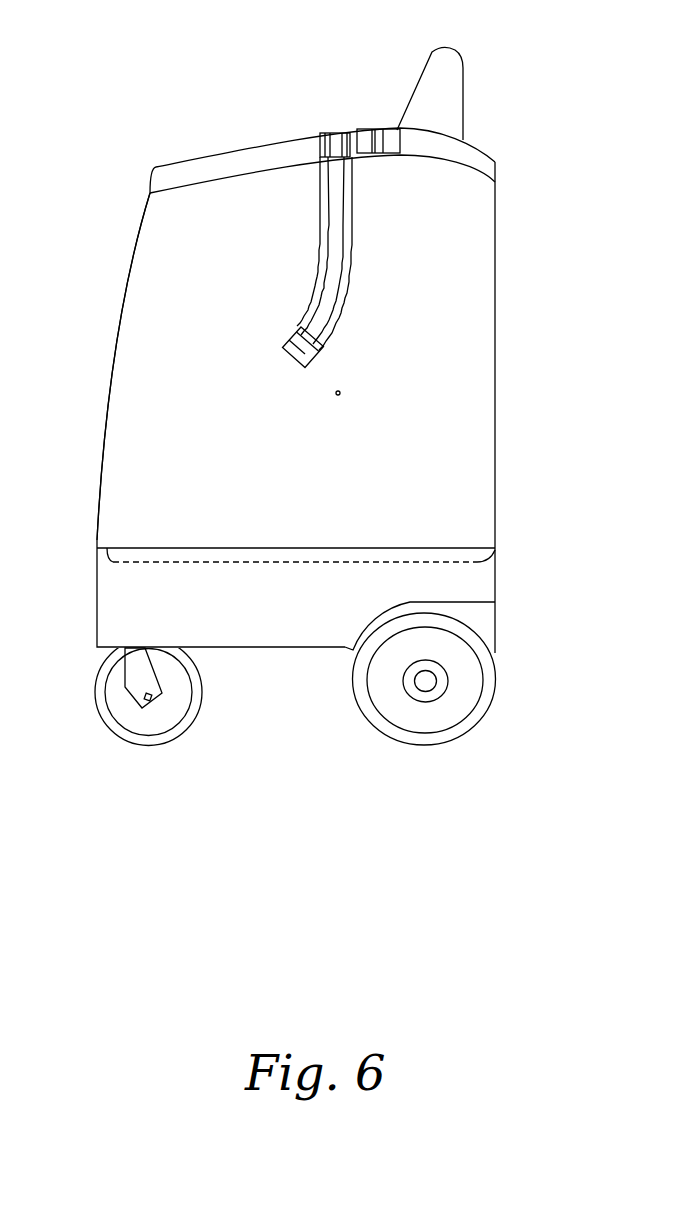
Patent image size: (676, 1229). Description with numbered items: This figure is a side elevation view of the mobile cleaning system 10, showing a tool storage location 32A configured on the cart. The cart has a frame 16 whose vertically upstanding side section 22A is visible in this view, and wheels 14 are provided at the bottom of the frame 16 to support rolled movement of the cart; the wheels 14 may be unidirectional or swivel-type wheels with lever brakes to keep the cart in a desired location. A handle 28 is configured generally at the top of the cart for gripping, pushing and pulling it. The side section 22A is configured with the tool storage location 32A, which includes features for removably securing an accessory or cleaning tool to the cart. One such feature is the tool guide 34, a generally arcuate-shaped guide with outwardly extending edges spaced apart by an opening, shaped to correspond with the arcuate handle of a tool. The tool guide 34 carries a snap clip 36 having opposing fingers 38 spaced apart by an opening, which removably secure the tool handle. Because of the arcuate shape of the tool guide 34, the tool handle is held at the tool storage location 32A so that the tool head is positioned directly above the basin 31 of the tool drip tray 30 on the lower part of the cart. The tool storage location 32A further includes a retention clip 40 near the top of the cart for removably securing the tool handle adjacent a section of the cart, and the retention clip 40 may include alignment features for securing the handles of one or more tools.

The mobile cleaning system 10 is at (494, 145).
The wheels 14 is at (100, 690).
The frame 16 is at (495, 622).
The side section 22A is at (310, 419).
The handle 28 is at (440, 48).
The tool drip tray 30 is at (120, 550).
The basin 31 is at (447, 562).
The tool storage location 32A is at (147, 300).
The tool guide 34 is at (321, 258).
The snap clip 36 is at (288, 351).
The fingers 38 is at (300, 330).
The retention clip 40 is at (370, 130).